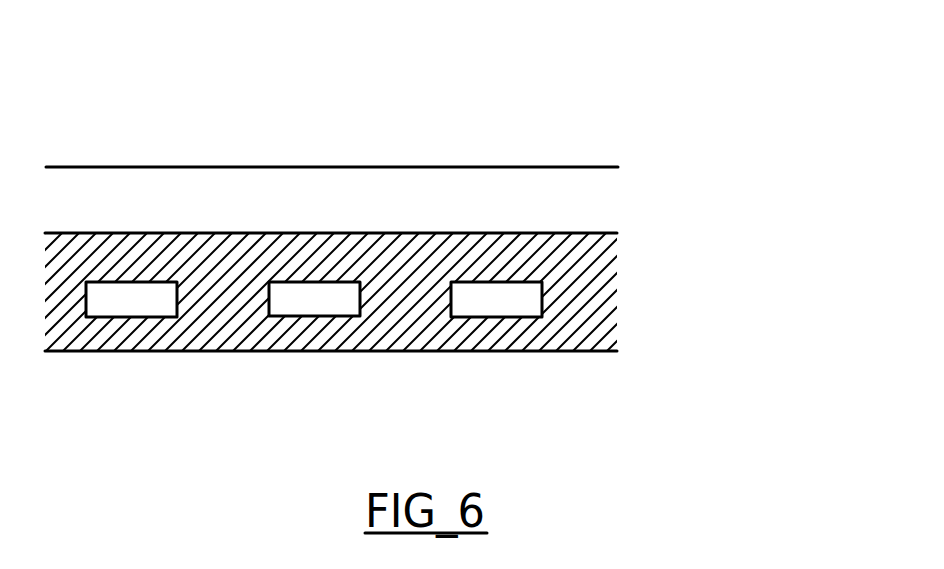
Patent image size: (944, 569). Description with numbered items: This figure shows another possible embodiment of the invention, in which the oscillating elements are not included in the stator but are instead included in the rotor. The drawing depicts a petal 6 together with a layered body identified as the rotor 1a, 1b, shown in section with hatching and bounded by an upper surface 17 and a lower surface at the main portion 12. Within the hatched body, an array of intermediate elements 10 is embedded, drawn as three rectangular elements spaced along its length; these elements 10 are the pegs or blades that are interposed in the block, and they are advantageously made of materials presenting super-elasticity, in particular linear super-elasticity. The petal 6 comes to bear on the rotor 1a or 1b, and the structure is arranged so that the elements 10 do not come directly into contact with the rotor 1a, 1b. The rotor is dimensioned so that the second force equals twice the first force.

The petal 6 is at (358, 167).
The top surface of layer 17 is at (630, 257).
The main portion 12 is at (617, 342).
The intermediate elements 10 is at (577, 300).
The rotor 1a is at (456, 334).
The rotor 1b is at (450, 334).